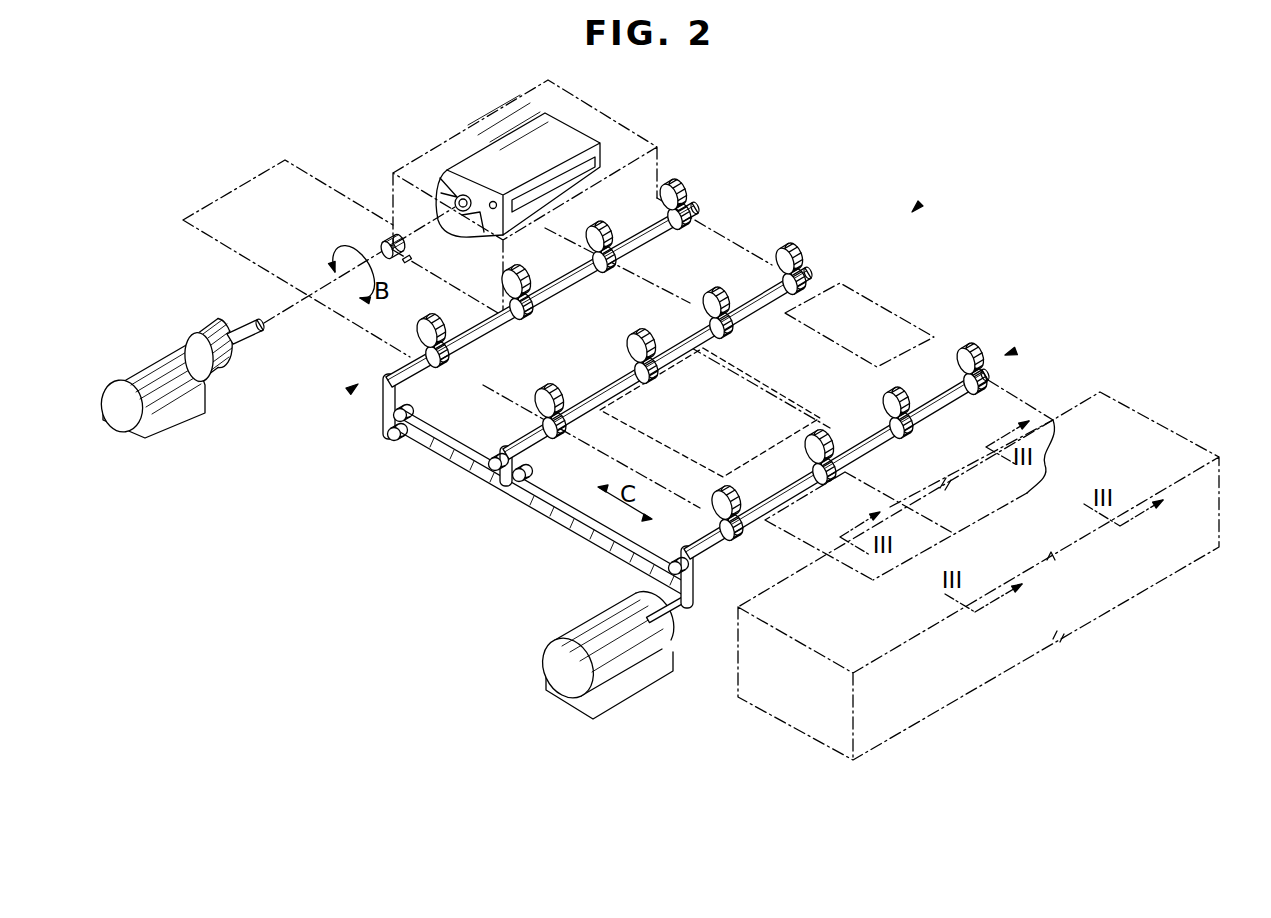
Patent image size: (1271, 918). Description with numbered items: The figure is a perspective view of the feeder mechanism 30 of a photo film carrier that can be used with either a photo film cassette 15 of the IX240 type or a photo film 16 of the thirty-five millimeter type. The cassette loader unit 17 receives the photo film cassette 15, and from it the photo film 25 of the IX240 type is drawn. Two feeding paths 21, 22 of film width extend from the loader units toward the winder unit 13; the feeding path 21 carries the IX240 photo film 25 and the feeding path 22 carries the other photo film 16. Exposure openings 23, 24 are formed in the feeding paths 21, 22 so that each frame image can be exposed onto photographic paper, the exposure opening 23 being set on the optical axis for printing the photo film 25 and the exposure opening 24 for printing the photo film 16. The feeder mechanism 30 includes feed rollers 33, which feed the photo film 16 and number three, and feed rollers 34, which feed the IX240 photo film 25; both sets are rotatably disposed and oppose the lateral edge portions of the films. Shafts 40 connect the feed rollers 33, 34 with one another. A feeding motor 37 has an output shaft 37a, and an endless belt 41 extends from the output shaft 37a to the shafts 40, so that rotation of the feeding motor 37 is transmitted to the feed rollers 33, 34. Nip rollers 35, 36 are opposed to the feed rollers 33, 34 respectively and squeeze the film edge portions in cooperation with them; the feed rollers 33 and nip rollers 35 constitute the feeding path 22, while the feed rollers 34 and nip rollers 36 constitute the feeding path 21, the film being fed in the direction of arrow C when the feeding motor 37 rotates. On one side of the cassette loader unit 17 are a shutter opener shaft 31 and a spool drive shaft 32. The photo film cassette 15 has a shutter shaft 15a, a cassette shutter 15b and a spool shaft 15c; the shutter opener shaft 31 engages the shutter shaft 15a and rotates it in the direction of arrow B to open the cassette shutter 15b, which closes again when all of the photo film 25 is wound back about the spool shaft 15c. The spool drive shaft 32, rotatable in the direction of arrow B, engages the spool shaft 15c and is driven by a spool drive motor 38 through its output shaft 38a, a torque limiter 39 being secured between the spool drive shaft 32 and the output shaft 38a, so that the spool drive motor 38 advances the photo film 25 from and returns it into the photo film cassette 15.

The winder unit 13 is at (1125, 415).
The photo film cassette 15 is at (498, 146).
The shutter shaft 15a is at (493, 200).
The cassette shutter 15b is at (560, 180).
The spool shaft 15c is at (453, 203).
The photo film 16 is at (300, 155).
The cassette loader unit 17 is at (617, 113).
The feeding path 21 is at (1010, 353).
The feeding path 22 is at (354, 387).
The exposure opening 23 is at (900, 300).
The exposure opening 24 is at (628, 470).
The photo film 25 is at (742, 228).
The feeder mechanism 30 is at (916, 208).
The shutter opener shaft 31 is at (414, 261).
The spool drive shaft 32 is at (380, 243).
The feed rollers 33 is at (520, 320).
The feed rollers 34 is at (680, 222).
The nip rollers 35 is at (426, 322).
The nip rollers 36 is at (673, 184).
The feeding motor 37 is at (640, 690).
The output shaft 37a is at (672, 606).
The spool drive motor 38 is at (153, 366).
The output shaft 38a is at (212, 378).
The torque limiter 39 is at (212, 319).
The shafts 40 is at (398, 375).
The endless belt 41 is at (490, 478).